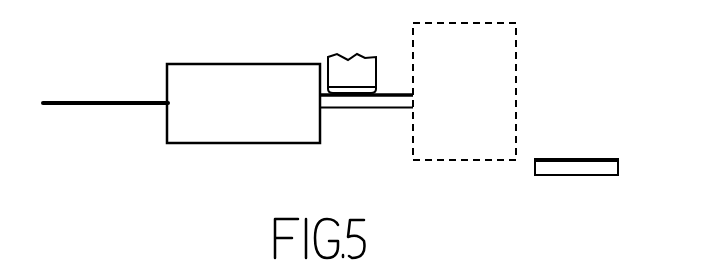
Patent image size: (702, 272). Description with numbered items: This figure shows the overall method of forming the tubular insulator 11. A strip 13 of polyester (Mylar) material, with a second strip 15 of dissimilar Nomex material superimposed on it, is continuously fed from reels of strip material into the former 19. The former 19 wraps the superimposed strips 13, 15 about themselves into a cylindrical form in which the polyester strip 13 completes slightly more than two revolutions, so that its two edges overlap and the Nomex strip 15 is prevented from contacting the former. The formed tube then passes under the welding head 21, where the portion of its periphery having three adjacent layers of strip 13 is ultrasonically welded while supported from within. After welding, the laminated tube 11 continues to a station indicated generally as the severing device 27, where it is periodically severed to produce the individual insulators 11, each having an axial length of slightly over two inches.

The insulator 11 is at (592, 170).
The strip of polyester material 13 is at (118, 107).
The second strip 15 is at (100, 100).
The former 19 is at (312, 126).
The welding head 21 is at (356, 63).
The severing device 27 is at (505, 59).